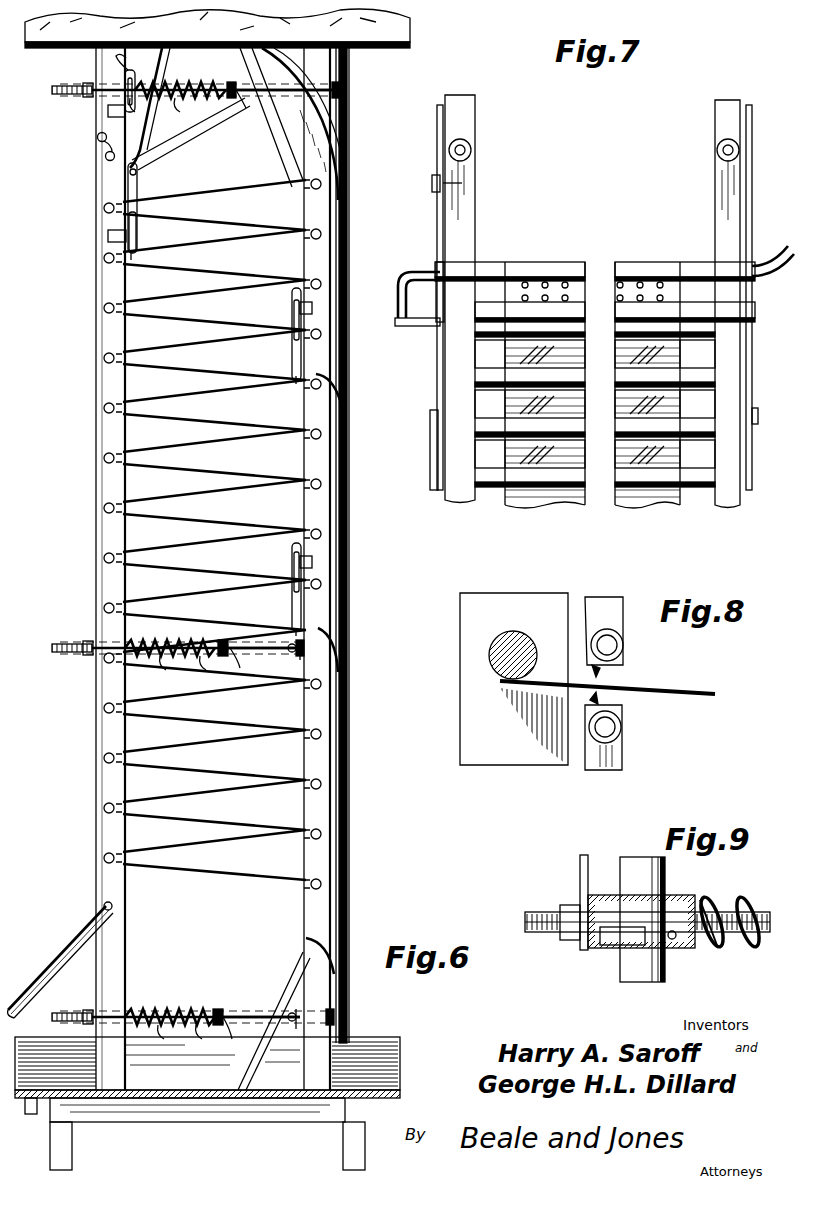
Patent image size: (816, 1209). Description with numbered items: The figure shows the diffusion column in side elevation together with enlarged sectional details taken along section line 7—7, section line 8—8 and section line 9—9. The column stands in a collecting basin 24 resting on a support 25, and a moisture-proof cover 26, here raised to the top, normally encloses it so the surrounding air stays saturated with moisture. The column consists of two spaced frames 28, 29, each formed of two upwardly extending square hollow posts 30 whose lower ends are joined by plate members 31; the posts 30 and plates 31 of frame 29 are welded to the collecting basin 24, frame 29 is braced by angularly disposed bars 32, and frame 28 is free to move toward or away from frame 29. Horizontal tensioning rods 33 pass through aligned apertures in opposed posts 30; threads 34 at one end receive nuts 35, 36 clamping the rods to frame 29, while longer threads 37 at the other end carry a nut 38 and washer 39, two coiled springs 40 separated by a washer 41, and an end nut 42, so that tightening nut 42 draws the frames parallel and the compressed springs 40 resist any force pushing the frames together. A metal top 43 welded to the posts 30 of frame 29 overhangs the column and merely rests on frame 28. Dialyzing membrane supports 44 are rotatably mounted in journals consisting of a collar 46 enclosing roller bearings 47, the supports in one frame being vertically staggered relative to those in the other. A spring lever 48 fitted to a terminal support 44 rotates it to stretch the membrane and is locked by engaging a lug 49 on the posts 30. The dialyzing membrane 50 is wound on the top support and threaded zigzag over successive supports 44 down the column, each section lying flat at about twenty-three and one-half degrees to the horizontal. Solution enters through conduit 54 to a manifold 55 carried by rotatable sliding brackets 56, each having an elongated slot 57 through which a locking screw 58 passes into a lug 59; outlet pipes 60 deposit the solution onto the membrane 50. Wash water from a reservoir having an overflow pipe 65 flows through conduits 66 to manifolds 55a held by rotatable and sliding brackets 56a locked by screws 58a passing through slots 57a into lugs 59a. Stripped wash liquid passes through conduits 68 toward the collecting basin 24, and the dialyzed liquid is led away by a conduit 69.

In FIG. 6, the section line 7— 7 is at (82, 110).
In FIG. 7, the section line 8— 8 is at (593, 325).
In FIG. 6, the section line 9— 9 is at (160, 457).
In FIG. 6, the collecting basin 24 is at (404, 1050).
In FIG. 6, the support 25 is at (326, 1141).
In FIG. 6, the moisture-proof cover 26 is at (408, 28).
In FIG. 6, the left-hand frame 28 is at (88, 550).
In FIG. 6, the right-hand frame 29 is at (330, 714).
In FIG. 6, the post 30 is at (96, 772).
In FIG. 7, the post 30 is at (445, 392).
In FIG. 8, the post 30 is at (466, 706).
In FIG. 9, the post 30 is at (600, 948).
In FIG. 6, the plate member 31 is at (90, 1062).
In FIG. 6, the angularly disposed bar 32 is at (288, 976).
In FIG. 6, the tensioning rod 33 is at (262, 96).
In FIG. 6, the threads 34 is at (288, 646).
In FIG. 6, the nut 35 is at (300, 656).
In FIG. 6, the nut 36 is at (344, 80).
In FIG. 6, the threads 37 is at (62, 96).
In FIG. 9, the threads 37 is at (534, 912).
In FIG. 6, the nut 38 is at (232, 84).
In FIG. 6, the washer 39 is at (215, 86).
In FIG. 6, the coiled spring 40 is at (162, 1008).
In FIG. 9, the coiled spring 40 is at (756, 896).
In FIG. 6, the washer 41 is at (168, 100).
In FIG. 6, the nut 42 is at (82, 88).
In FIG. 7, the nut 42 is at (472, 150).
In FIG. 9, the nut 42 is at (570, 904).
In FIG. 6, the metal top 43 is at (395, 46).
In FIG. 6, the dialyzing membrane support 44 is at (322, 232).
In FIG. 7, the dialyzing membrane support 44 is at (478, 370).
In FIG. 8, the dialyzing membrane support 44 is at (516, 630).
In FIG. 9, the dialyzing membrane support 44 is at (666, 882).
In FIG. 9, the collar 46 is at (614, 946).
In FIG. 9, the roller bearings 47 is at (676, 940).
In FIG. 6, the spring lever 48 is at (106, 158).
In FIG. 7, the spring lever 48 is at (446, 258).
In FIG. 6, the lug 49 is at (106, 146).
In FIG. 7, the lug 49 is at (438, 262).
In FIG. 6, the dialyzing membrane 50 is at (242, 222).
In FIG. 7, the dialyzing membrane 50 is at (595, 508).
In FIG. 8, the dialyzing membrane 50 is at (682, 692).
In FIG. 6, the conduit 54 is at (168, 58).
In FIG. 7, the conduit 54 is at (780, 250).
In FIG. 7, the manifold 55 is at (692, 270).
In FIG. 8, the manifold 55 is at (624, 650).
In FIG. 7, the manifold 55a is at (716, 298).
In FIG. 8, the manifold 55a is at (622, 724).
In FIG. 6, the rotatable sliding bracket 56 is at (150, 158).
In FIG. 7, the rotatable sliding bracket 56 is at (436, 126).
In FIG. 8, the rotatable sliding bracket 56 is at (632, 580).
In FIG. 6, the rotatable and sliding bracket 56a is at (140, 190).
In FIG. 7, the rotatable and sliding bracket 56a is at (436, 454).
In FIG. 8, the rotatable and sliding bracket 56a is at (622, 760).
In FIG. 6, the elongated slot 57 is at (122, 66).
In FIG. 6, the slot 57a is at (138, 244).
In FIG. 6, the locking screw 58 is at (97, 136).
In FIG. 7, the locking screw 58 is at (432, 180).
In FIG. 6, the screw 58a is at (138, 232).
In FIG. 7, the screw 58a is at (436, 420).
In FIG. 6, the lug 59 is at (108, 111).
In FIG. 7, the lug 59 is at (462, 183).
In FIG. 6, the lug 59a is at (108, 235).
In FIG. 7, the outlet pipe 60 is at (664, 286).
In FIG. 8, the outlet pipe 60 is at (604, 670).
In FIG. 6, the overflow pipe 65 is at (350, 180).
In FIG. 6, the conduit 66 is at (346, 104).
In FIG. 6, the conduit 68 is at (342, 378).
In FIG. 6, the conduit 69 is at (42, 985).